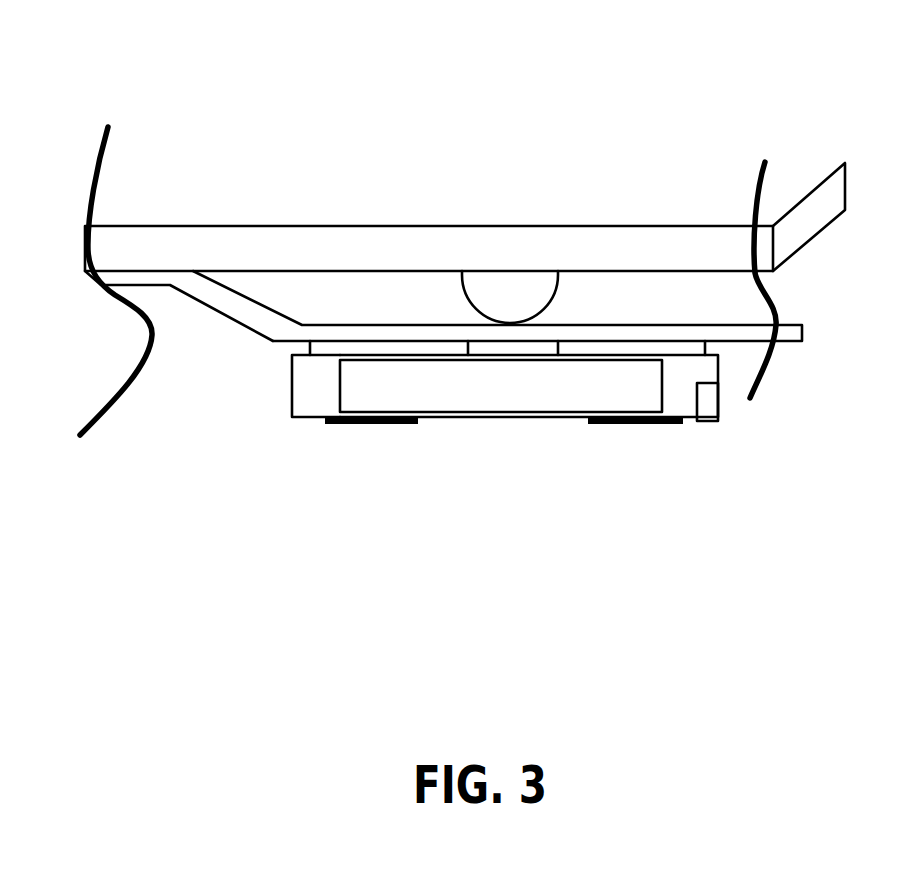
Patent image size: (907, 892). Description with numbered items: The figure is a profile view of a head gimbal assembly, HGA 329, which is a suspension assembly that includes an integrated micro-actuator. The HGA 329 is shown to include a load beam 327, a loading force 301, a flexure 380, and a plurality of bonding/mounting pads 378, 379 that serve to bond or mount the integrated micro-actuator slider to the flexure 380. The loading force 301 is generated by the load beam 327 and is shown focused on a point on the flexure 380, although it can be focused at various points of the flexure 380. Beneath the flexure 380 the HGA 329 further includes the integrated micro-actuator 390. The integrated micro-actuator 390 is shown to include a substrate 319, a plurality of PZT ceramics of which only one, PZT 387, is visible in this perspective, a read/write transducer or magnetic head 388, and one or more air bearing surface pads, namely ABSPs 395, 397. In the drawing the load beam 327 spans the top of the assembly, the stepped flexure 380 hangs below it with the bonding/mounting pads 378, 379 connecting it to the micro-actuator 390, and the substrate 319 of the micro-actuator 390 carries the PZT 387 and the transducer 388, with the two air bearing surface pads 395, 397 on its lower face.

The HGA 329 is at (499, 46).
The load beam 327 is at (280, 247).
The loading force 301 is at (513, 288).
The flexure 380 is at (253, 318).
The bonding/mounting pad 379 is at (395, 333).
The bonding/mounting pad 378 is at (593, 348).
The integrated micro-actuator 390 is at (288, 385).
The substrate 319 is at (313, 390).
The PZT ceramic 387 is at (545, 392).
The read/write transducer 388 is at (705, 403).
The air bearing surface pad 397 is at (365, 427).
The air bearing surface pad 395 is at (645, 425).